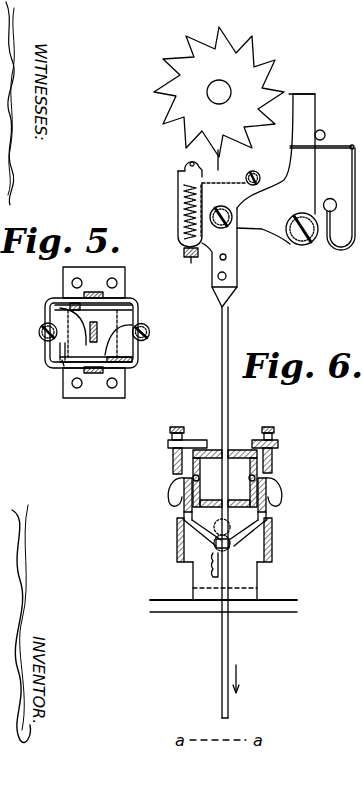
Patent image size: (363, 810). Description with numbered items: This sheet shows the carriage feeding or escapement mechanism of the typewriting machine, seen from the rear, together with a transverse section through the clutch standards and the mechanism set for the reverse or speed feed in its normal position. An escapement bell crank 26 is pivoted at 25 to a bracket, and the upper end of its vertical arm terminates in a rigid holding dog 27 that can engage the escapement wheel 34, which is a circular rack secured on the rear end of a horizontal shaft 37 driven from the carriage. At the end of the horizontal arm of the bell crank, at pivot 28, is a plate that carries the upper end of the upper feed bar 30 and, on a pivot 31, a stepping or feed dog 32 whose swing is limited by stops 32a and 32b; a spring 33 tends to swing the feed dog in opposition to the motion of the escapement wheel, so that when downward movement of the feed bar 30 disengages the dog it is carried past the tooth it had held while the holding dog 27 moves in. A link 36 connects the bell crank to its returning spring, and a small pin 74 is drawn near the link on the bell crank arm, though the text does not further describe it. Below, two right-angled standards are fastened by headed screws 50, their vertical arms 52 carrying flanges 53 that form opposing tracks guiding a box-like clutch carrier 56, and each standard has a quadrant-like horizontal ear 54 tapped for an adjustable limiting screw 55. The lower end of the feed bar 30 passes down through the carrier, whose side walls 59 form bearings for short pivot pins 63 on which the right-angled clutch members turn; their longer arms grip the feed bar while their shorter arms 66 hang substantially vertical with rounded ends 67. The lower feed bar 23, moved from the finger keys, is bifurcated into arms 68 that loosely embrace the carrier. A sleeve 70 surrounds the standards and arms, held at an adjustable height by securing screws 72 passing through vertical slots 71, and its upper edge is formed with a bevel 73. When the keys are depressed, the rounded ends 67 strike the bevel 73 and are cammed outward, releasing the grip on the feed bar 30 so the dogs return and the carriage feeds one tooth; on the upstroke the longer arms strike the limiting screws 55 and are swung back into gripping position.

In FIG. 6, the lower feed bar 23 is at (222, 677).
In FIG. 6, the pivot 25 is at (296, 243).
In FIG. 6, the escapement bell crank 26 is at (276, 169).
In FIG. 6, the holding dog 27 is at (293, 93).
In FIG. 6, the pivot 28 is at (220, 209).
In FIG. 5, the upper feed bar 30 is at (97, 331).
In FIG. 6, the upper feed bar 30 is at (228, 338).
In FIG. 6, the pivot 31 is at (263, 179).
In FIG. 6, the feed dog 32 is at (218, 160).
In FIG. 6, the stop 32a is at (186, 163).
In FIG. 6, the stop 32b is at (188, 264).
In FIG. 6, the spring 33 is at (179, 207).
In FIG. 6, the escapement wheel 34 is at (219, 92).
In FIG. 6, the link 36 is at (332, 150).
In FIG. 6, the horizontal shaft 37 is at (229, 88).
In FIG. 5, the headed screws 50 is at (118, 284).
In FIG. 5, the vertical arms 52 is at (117, 310).
In FIG. 6, the vertical arms 52 is at (253, 572).
In FIG. 5, the flanges 53 is at (135, 311).
In FIG. 5, the horizontal ear 54 is at (58, 328).
In FIG. 6, the limiting screws 55 is at (173, 462).
In FIG. 5, the clutch carrier 56 is at (136, 364).
In FIG. 6, the clutch carrier 56 is at (229, 450).
In FIG. 5, the side walls 59 is at (63, 360).
In FIG. 6, the pivot pins 63 is at (250, 476).
In FIG. 6, the shorter arms 66 is at (280, 493).
In FIG. 6, the rounded ends 67 is at (170, 506).
In FIG. 6, the arms 68 is at (183, 513).
In FIG. 6, the sleeve 70 is at (272, 544).
In FIG. 6, the vertical slots 71 is at (211, 527).
In FIG. 5, the securing screws 72 is at (95, 323).
In FIG. 6, the securing screws 72 is at (232, 540).
In FIG. 6, the bevel 73 is at (268, 522).
In FIG. 6, the pin 74 is at (328, 134).